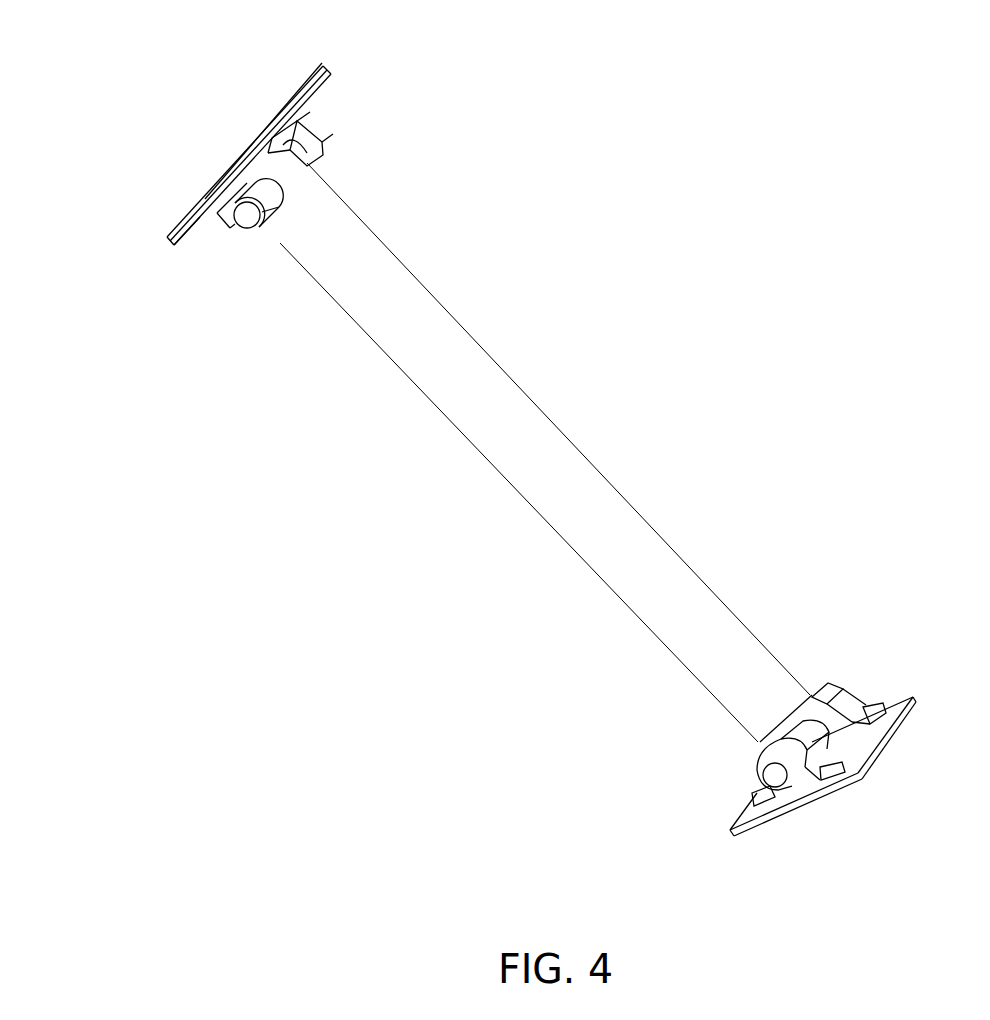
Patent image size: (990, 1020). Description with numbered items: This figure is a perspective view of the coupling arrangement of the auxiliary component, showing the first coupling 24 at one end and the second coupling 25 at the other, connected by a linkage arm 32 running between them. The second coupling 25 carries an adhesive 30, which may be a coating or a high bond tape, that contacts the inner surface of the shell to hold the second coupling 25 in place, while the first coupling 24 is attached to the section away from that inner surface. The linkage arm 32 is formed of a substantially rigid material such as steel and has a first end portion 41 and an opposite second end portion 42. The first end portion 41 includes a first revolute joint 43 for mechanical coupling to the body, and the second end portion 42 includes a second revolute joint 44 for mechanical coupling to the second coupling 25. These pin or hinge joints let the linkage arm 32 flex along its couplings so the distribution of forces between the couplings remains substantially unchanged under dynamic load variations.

The first coupling 24 is at (742, 815).
The second coupling 25 is at (192, 228).
The adhesive 30 is at (245, 155).
The linkage arm 32 is at (555, 423).
The first end portion 41 is at (798, 677).
The second end portion 42 is at (332, 180).
The first revolute joint 43 is at (780, 775).
The second revolute joint 44 is at (248, 217).